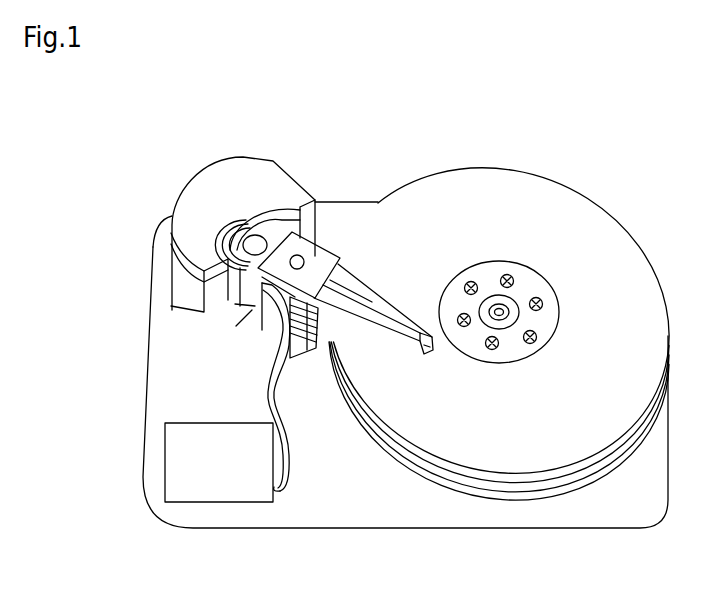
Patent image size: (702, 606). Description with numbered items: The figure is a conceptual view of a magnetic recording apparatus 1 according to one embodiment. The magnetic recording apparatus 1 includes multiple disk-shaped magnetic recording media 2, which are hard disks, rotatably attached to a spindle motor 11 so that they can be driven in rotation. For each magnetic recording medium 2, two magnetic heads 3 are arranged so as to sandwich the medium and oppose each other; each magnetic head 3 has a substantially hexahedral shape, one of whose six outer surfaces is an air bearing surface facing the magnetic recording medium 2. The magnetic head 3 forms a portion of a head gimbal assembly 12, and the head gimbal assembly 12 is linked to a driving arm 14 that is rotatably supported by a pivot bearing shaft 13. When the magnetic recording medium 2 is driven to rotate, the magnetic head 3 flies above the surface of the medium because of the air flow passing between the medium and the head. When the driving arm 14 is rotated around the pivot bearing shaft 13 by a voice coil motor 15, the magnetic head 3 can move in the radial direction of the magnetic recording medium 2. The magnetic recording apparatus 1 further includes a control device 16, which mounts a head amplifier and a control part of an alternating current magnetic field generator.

The magnetic recording apparatus 1 is at (457, 91).
The magnetic recording medium 2 is at (532, 190).
The magnetic head 3 is at (434, 356).
The spindle motor 11 is at (502, 311).
The head gimbal assembly 12 is at (388, 333).
The pivot bearing shaft 13 is at (299, 261).
The driving arm 14 is at (362, 280).
The voice coil motor 15 is at (251, 297).
The control device 16 is at (204, 490).